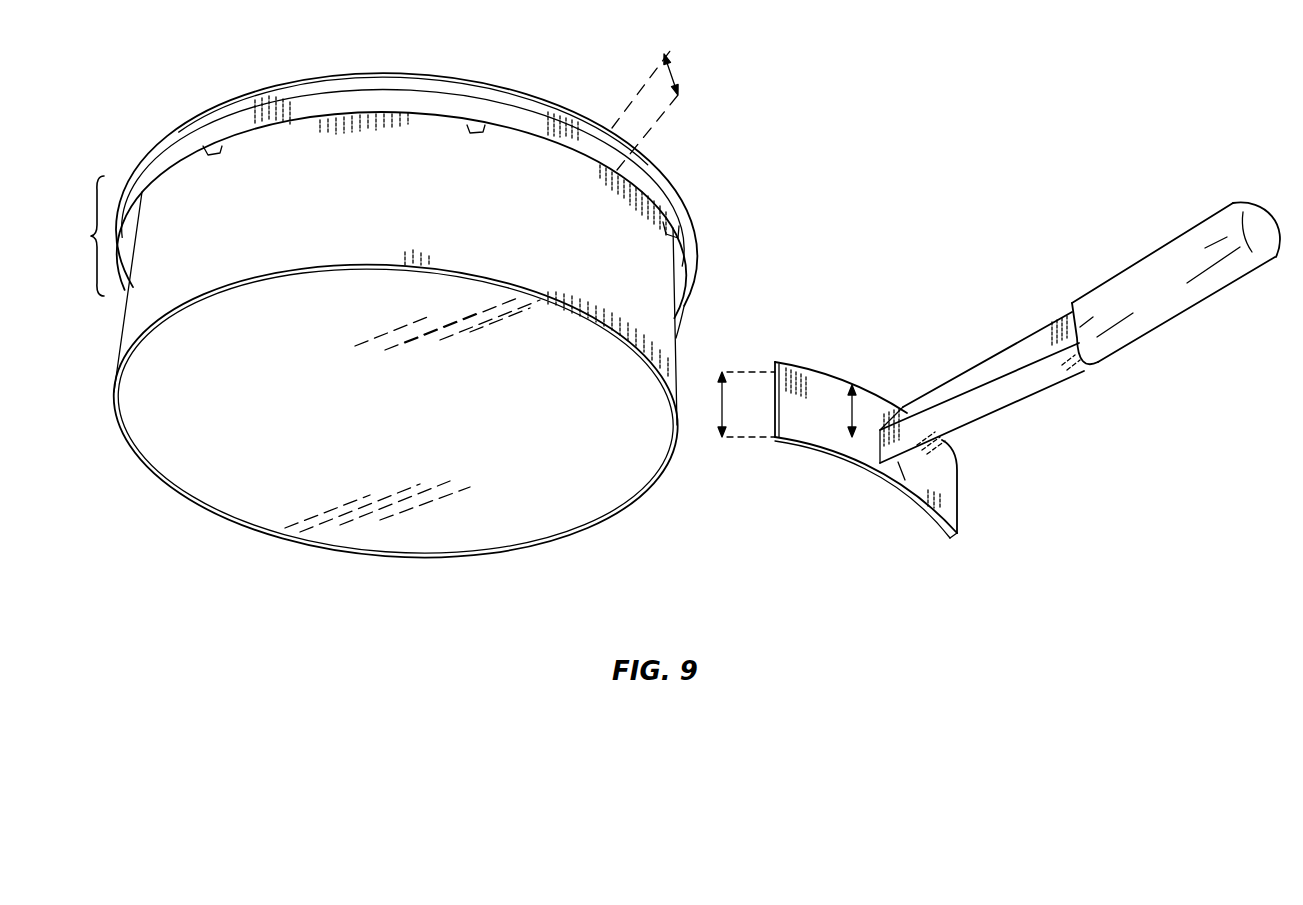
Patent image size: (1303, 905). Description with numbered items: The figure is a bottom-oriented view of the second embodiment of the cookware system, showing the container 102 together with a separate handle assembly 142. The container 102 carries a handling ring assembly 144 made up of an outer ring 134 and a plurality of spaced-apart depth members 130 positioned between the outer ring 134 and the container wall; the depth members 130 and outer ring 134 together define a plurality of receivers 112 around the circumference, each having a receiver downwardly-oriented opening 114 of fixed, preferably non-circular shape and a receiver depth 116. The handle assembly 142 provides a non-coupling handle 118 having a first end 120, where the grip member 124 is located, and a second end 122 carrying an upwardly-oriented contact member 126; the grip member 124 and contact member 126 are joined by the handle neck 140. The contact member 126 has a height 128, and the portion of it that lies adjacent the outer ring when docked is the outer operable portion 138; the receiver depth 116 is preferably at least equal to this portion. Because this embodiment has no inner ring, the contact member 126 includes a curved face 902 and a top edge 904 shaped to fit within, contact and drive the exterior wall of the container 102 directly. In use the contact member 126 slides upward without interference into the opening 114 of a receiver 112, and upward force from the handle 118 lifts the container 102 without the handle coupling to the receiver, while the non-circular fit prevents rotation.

The container 102 is at (207, 70).
The receiver 112 is at (158, 150).
The receiver downwardly-oriented opening 114 is at (681, 276).
The receiver depth 116 is at (673, 68).
The non-coupling handle 118 is at (970, 430).
The first end 120 is at (1255, 262).
The second end 122 is at (900, 466).
The grip member 124 is at (1165, 317).
The contact member 126 is at (942, 482).
The height 128 is at (740, 404).
The depth member 130 is at (477, 133).
The outer ring 134 is at (497, 110).
The outer operable portion 138 is at (853, 403).
The handle neck 140 is at (1015, 397).
The handle assembly 142 is at (903, 297).
The handling ring assembly 144 is at (74, 236).
The curved face 902 is at (833, 456).
The top edge 904 is at (783, 365).